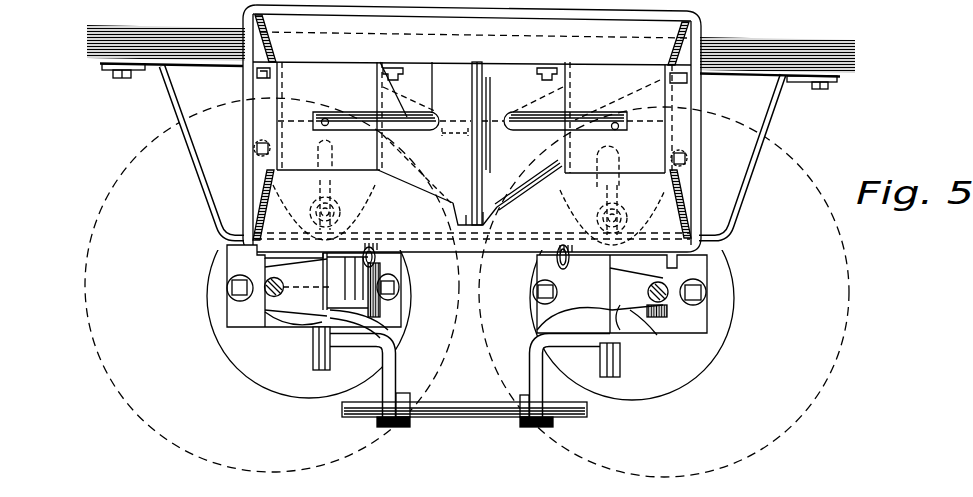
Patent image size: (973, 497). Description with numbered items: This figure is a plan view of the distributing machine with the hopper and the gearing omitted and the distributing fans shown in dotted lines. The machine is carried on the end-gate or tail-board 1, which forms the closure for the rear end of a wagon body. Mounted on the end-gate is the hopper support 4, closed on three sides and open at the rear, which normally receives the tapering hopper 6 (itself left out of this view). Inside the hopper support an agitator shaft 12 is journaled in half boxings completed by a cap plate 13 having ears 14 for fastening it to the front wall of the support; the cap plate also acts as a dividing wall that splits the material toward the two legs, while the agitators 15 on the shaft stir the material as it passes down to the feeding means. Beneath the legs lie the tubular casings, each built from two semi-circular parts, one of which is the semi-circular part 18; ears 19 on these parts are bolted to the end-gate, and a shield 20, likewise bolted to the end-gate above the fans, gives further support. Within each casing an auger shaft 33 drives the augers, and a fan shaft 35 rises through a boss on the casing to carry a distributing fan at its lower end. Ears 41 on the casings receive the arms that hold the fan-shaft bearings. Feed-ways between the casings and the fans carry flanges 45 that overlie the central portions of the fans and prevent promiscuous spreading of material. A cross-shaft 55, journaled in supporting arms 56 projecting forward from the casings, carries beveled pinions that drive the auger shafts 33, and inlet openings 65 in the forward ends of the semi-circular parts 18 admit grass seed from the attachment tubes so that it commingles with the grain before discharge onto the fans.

The end-gate 1 is at (155, 38).
The hopper support 4 is at (423, 50).
The hopper 6 is at (290, 117).
The agitator shaft 12 is at (362, 114).
The cap plate 13 is at (474, 143).
The ears 14 is at (484, 221).
The agitators 15 is at (320, 131).
The semi-circular part 18 is at (293, 323).
The ears 19 is at (148, 66).
The shield 20 is at (472, 152).
The auger shaft 33 is at (313, 370).
The fan shaft 35 is at (264, 295).
The ears 41 is at (265, 264).
The flanges 45 is at (380, 355).
The cross-shaft 55 is at (468, 420).
The supporting arms 56 is at (383, 423).
The inlet openings 65 is at (405, 257).